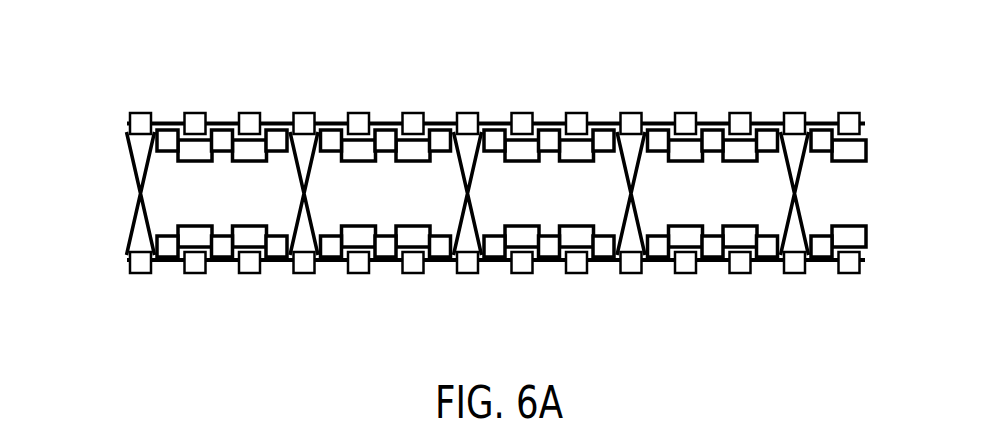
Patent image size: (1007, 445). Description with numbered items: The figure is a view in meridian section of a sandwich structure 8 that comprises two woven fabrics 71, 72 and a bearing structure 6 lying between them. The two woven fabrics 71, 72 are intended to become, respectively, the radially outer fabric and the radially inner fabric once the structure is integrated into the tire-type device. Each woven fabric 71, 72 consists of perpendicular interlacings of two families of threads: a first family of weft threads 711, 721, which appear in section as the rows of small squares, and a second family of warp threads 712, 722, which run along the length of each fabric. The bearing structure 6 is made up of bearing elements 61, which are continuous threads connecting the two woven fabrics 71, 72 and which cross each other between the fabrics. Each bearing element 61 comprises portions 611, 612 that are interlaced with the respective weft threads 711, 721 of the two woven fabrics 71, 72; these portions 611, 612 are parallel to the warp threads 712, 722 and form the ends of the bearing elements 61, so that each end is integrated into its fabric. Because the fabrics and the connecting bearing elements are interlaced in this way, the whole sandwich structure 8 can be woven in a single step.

The sandwich structure 8 is at (494, 196).
The woven fabric 71 is at (520, 113).
The woven fabric 72 is at (520, 278).
The bearing structure 6 is at (470, 193).
The bearing elements 61 is at (125, 177).
The portions 611 is at (358, 181).
The portions 612 is at (525, 207).
The weft threads 711 is at (678, 100).
The warp threads 712 is at (219, 112).
The weft threads 721 is at (677, 287).
The warp threads 722 is at (219, 272).